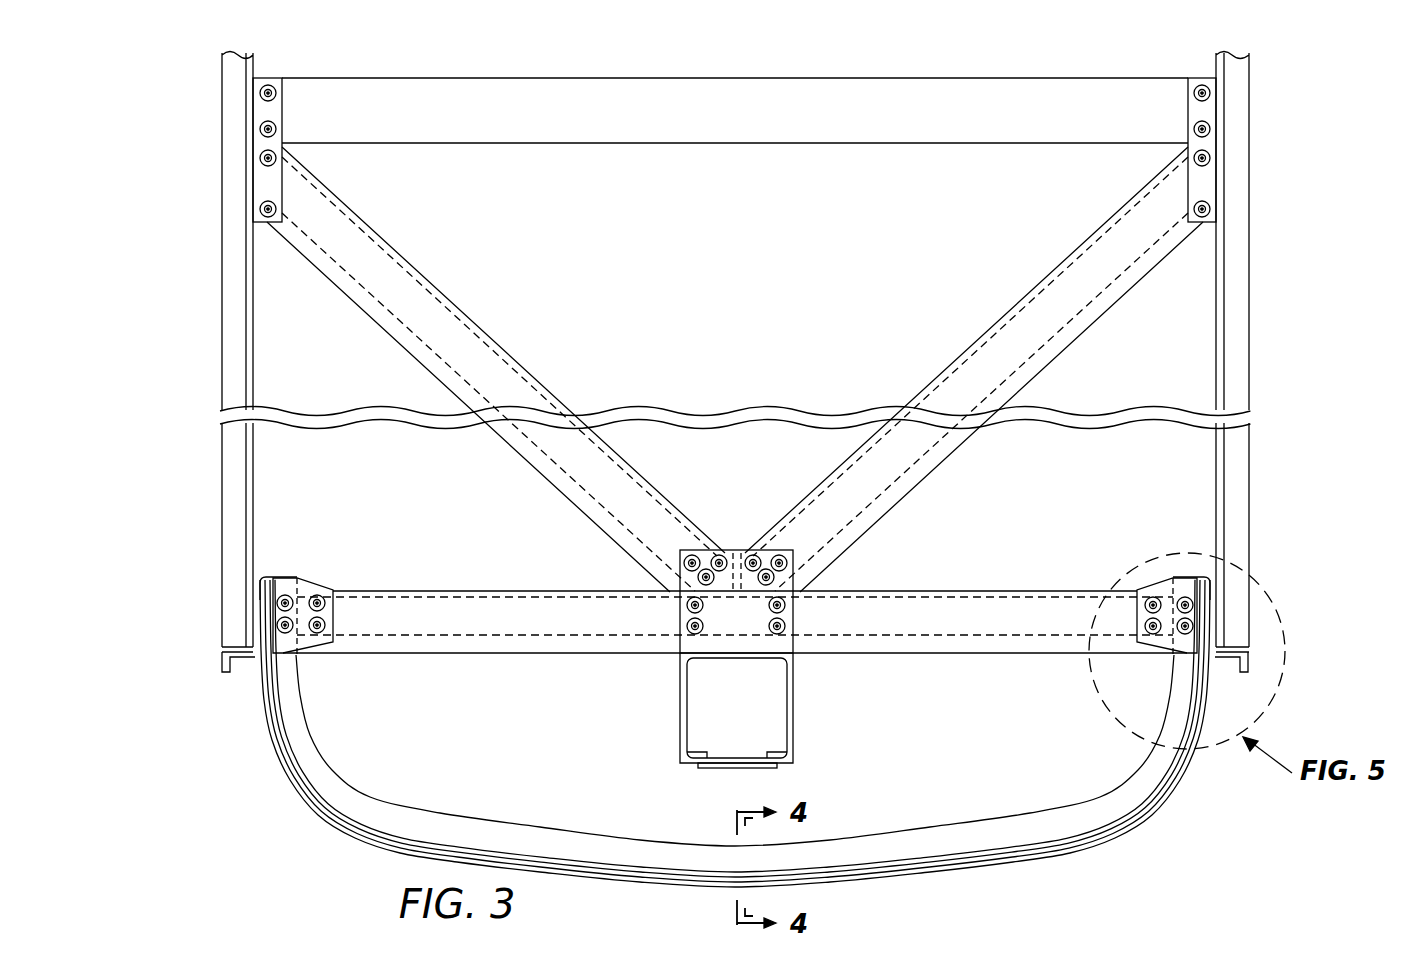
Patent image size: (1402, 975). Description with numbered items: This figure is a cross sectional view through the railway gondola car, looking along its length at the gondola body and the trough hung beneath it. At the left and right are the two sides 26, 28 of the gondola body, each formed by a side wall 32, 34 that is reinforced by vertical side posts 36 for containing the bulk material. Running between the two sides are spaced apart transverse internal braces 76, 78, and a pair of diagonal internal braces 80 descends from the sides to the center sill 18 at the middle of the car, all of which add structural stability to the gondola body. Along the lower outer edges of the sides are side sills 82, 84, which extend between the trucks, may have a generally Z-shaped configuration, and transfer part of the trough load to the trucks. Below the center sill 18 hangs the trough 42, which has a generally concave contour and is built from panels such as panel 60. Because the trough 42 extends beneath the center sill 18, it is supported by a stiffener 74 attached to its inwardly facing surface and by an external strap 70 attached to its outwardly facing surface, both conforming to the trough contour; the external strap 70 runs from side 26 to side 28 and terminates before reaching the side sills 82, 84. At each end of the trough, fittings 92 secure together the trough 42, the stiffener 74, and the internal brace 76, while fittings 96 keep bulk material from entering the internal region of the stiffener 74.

The center sill 18 is at (680, 687).
The side 26 is at (160, 300).
The side 28 is at (1312, 302).
The side wall 32 is at (247, 262).
The side wall 34 is at (1225, 262).
The side posts 36 is at (222, 488).
The trough 42 is at (1074, 866).
The panel 60 is at (923, 867).
The external strap 70 is at (363, 837).
The stiffener 74 is at (440, 812).
The transverse internal brace 76 is at (980, 591).
The transverse internal brace 78 is at (722, 125).
The diagonal internal braces 80 is at (447, 298).
The side sill 82 is at (1248, 667).
The side sill 84 is at (222, 663).
The fittings 92 is at (307, 583).
The fittings 96 is at (278, 577).